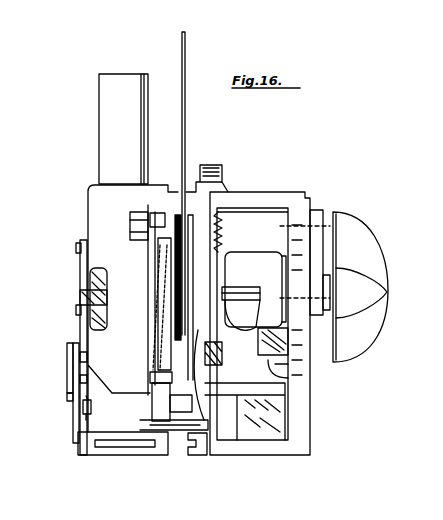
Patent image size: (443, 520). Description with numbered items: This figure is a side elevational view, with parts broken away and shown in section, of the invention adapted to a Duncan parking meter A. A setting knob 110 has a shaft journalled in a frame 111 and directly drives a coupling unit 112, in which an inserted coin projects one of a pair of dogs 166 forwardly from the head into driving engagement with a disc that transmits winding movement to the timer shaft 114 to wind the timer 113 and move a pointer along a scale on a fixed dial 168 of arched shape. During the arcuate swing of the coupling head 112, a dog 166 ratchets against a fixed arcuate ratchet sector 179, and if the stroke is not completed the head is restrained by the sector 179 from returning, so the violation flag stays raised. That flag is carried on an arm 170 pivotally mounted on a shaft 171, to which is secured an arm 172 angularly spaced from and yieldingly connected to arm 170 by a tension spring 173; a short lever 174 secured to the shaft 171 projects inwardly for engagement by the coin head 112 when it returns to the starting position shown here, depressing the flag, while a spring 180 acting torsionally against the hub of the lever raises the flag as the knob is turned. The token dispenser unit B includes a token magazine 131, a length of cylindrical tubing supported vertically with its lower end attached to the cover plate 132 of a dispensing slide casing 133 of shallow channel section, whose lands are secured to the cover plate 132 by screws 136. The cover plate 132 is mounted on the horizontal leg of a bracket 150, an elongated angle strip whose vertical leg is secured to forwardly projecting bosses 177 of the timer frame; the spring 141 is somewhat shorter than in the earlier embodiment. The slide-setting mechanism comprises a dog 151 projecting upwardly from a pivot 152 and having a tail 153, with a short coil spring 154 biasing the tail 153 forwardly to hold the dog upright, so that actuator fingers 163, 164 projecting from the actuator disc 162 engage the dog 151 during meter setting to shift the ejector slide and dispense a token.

The fixed dial 168 is at (180, 42).
The token magazine 131 is at (99, 119).
The timer 113 is at (133, 308).
The Duncan parking meter A is at (268, 188).
The frame 111 is at (307, 413).
The setting knob 110 is at (350, 229).
The fixed arcuate ratchet sector 179 is at (232, 235).
The coupling unit 112 is at (244, 256).
The dog 166 is at (240, 289).
The short lever 174 is at (250, 328).
The shaft 171 is at (251, 352).
The arm 172 is at (223, 348).
The arm 170 is at (175, 323).
The spring 180 is at (160, 356).
The bracket 150 is at (152, 421).
The tension spring 173 is at (185, 412).
The bosses 177 is at (174, 430).
The actuator disc 162 is at (80, 273).
The actuator finger 164 is at (78, 248).
The actuator finger 163 is at (78, 312).
The timer shaft 114 is at (105, 293).
The dog 151 is at (68, 347).
The pivot 152 is at (68, 363).
The tail 153 is at (68, 378).
The coil spring 154 is at (66, 392).
The spring 141 is at (84, 406).
The cover plate 132 is at (80, 436).
The screws 136 is at (90, 448).
The dispensing slide casing 133 is at (113, 457).
The token dispenser unit B is at (54, 456).